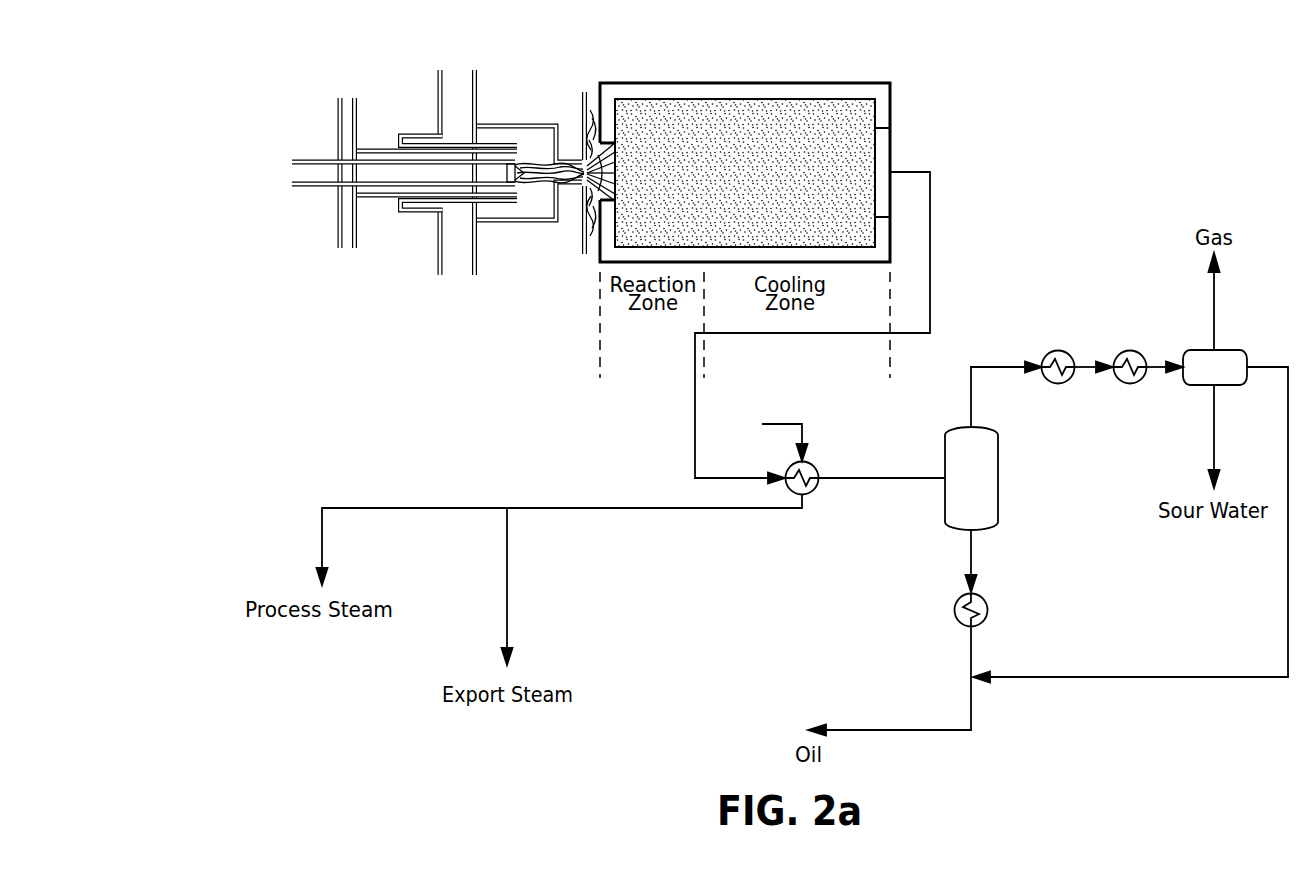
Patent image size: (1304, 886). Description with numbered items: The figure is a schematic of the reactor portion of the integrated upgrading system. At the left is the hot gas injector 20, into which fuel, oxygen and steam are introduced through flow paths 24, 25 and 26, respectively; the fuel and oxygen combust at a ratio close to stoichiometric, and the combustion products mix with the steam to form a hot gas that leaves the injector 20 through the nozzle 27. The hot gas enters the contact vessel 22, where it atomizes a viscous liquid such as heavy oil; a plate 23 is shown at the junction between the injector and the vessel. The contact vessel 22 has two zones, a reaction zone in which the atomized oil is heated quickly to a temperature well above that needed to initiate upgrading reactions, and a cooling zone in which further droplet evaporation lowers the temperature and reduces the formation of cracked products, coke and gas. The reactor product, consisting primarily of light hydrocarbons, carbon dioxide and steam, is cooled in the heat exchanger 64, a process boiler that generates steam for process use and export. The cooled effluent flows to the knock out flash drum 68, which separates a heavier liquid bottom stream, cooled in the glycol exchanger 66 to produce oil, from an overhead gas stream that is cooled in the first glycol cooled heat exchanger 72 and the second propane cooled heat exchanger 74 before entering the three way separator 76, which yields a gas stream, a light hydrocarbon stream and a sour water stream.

The hot gas injector 20 is at (413, 231).
The contact vessel 22 is at (724, 72).
The burner face plate 23 is at (591, 57).
The fuel flow path 24 is at (281, 172).
The oxygen flow path 25 is at (347, 80).
The steam flow path 26 is at (458, 72).
The nozzle 27 is at (563, 219).
The heat exchanger 64 is at (814, 468).
The glycol exchanger 66 is at (955, 612).
The knock out flash drum 68 is at (965, 496).
The first glycol cooled heat exchanger 72 is at (1058, 384).
The second propane cooled heat exchanger 74 is at (1130, 384).
The three way separator 76 is at (1227, 356).